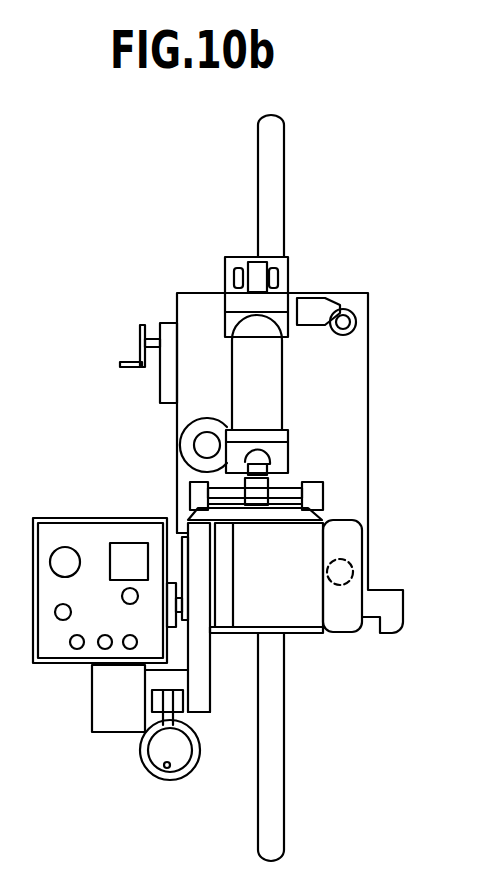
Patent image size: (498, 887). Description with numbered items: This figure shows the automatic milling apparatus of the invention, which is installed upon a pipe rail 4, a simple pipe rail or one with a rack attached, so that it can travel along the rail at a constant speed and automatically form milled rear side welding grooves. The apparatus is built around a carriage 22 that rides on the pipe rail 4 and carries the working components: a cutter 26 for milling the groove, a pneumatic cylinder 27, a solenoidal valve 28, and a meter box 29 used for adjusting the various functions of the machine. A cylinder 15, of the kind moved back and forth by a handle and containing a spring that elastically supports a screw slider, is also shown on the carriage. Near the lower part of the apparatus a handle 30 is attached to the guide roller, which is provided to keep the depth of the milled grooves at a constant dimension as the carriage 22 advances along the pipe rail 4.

The pipe rail 4 is at (258, 178).
The cylinder 15 is at (298, 612).
The carriage 22 is at (370, 487).
The cutter 26 is at (95, 717).
The pneumatic cylinder 27 is at (270, 377).
The solenoidal valve 28 is at (313, 310).
The meter box 29 is at (95, 537).
The handle 30 is at (165, 768).